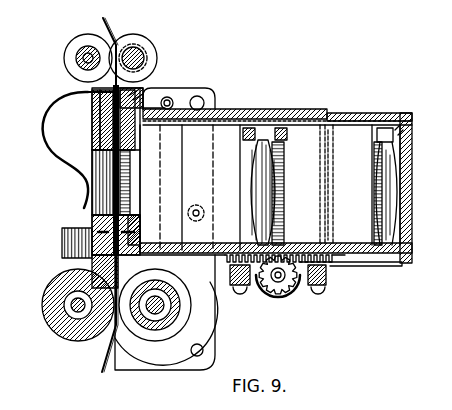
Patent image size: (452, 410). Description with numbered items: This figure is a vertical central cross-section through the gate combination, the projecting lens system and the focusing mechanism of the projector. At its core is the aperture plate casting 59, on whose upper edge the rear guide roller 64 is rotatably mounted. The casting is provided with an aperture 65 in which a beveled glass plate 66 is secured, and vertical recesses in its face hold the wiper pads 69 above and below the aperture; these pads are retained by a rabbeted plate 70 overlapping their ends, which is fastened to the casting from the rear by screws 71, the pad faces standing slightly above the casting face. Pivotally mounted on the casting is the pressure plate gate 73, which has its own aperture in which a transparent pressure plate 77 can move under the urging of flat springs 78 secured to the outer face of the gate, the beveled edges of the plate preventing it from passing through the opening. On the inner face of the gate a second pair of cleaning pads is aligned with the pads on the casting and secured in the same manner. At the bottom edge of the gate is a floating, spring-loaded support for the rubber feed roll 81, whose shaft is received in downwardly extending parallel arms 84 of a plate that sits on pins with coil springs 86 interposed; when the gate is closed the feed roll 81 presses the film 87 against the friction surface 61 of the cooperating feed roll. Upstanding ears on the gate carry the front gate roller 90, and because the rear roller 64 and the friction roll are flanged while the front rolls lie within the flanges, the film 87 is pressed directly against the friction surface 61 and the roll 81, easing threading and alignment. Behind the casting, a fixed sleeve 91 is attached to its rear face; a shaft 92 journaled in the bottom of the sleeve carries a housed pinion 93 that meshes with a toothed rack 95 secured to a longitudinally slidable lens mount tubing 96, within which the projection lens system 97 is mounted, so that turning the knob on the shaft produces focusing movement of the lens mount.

The aperture plate casting 59 is at (208, 92).
The friction surface 61 is at (172, 368).
The guide roller 64 is at (140, 47).
The aperture 65 is at (138, 160).
The glass plate 66 is at (120, 197).
The wiper pads 69 is at (143, 96).
The rabbeted plate 70 is at (165, 100).
The screws 71 is at (135, 166).
The pressure plate gate 73 is at (58, 146).
The transparent pressure plate 77 is at (94, 193).
The flat springs 78 is at (92, 92).
The feed roll 81 is at (72, 340).
The arms 84 is at (68, 268).
The coil springs 86 is at (66, 232).
The film 87 is at (108, 372).
The front gate roller 90 is at (86, 42).
The fixed sleeve 91 is at (294, 108).
The shaft 92 is at (268, 302).
The pinion 93 is at (292, 292).
The toothed rack 95 is at (338, 264).
The lens mount tubing 96 is at (392, 266).
The projection lens system 97 is at (357, 183).